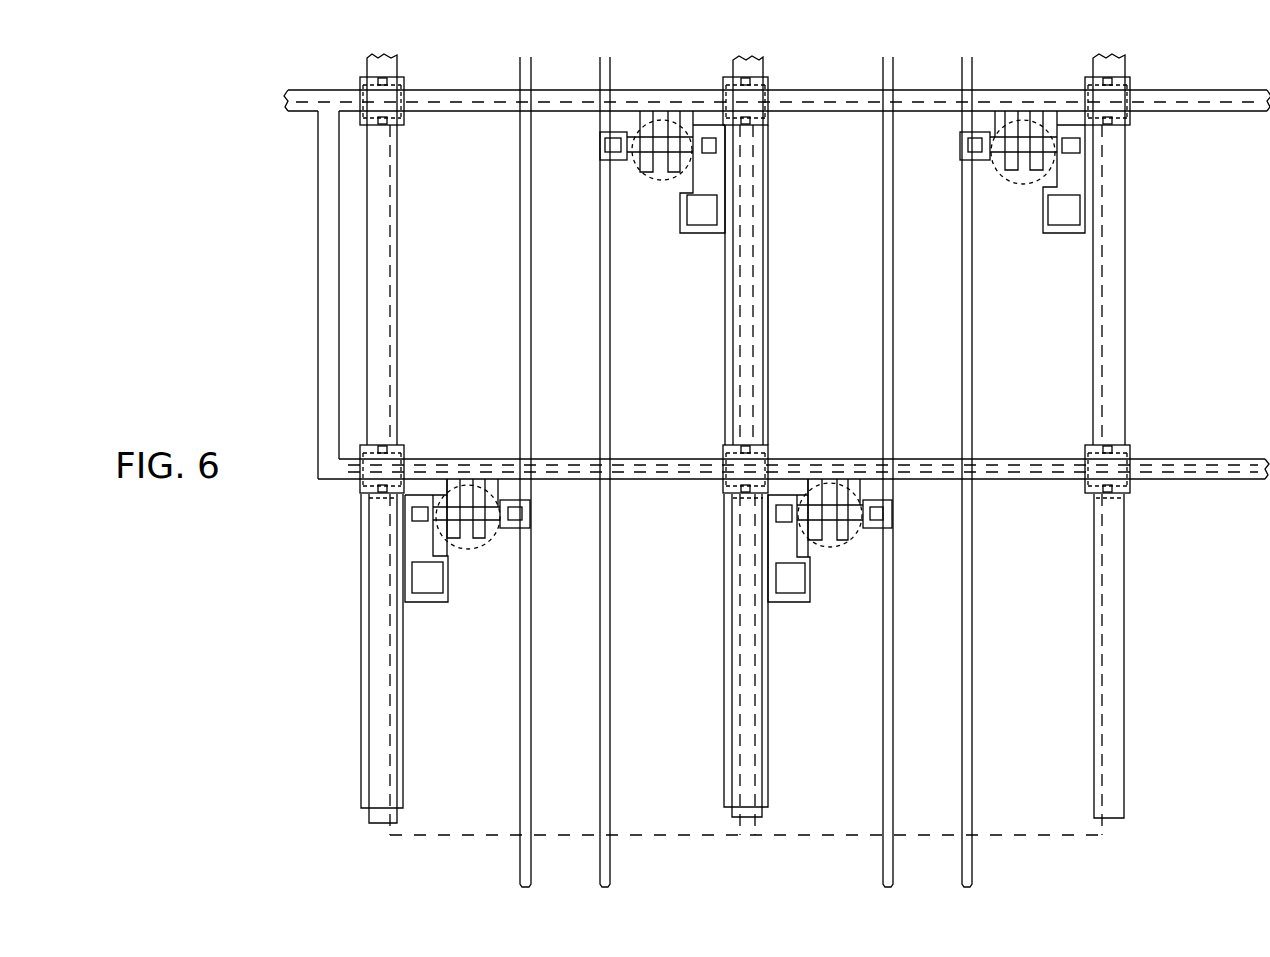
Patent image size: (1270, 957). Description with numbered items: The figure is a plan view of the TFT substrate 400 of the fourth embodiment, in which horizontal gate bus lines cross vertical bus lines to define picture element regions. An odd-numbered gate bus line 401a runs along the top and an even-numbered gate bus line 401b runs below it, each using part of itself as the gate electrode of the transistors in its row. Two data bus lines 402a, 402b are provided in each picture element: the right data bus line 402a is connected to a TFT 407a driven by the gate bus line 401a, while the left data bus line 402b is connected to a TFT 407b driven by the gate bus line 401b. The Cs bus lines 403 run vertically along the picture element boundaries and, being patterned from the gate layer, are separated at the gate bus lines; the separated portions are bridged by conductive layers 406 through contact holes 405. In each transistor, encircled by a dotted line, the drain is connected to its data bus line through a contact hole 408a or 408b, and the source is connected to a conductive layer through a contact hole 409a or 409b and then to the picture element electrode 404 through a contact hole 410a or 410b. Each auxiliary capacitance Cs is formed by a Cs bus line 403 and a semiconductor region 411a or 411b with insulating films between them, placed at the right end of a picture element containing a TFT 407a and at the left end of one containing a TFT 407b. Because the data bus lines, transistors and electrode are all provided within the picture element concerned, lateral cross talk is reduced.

The TFT substrate 400 is at (288, 521).
The odd-numbered gate bus line 401a is at (477, 90).
The even-numbered gate bus line 401b is at (478, 459).
The data bus line 402a is at (608, 420).
The data bus line 402b is at (523, 790).
The Cs bus line 403 is at (756, 72).
The picture element electrode 404 is at (548, 100).
The contact hole 405 is at (765, 79).
The conductive layer 406 is at (770, 99).
The TFT 407a is at (648, 182).
The TFT 407b is at (471, 560).
The contact hole 408a is at (605, 145).
The contact hole 408b is at (890, 518).
The contact hole 409a is at (708, 138).
The contact hole 409b is at (786, 505).
The contact hole 410a is at (703, 218).
The contact hole 410b is at (792, 590).
The semiconductor region 411a is at (725, 383).
The semiconductor region 411b is at (763, 712).
The auxiliary capacitance Cs is at (748, 272).